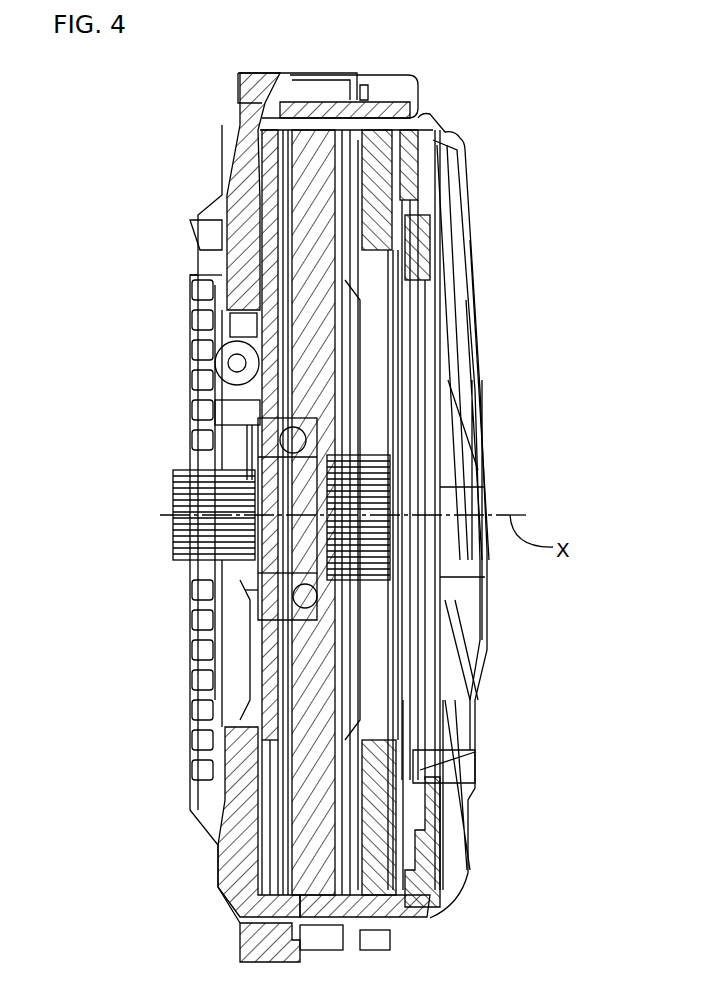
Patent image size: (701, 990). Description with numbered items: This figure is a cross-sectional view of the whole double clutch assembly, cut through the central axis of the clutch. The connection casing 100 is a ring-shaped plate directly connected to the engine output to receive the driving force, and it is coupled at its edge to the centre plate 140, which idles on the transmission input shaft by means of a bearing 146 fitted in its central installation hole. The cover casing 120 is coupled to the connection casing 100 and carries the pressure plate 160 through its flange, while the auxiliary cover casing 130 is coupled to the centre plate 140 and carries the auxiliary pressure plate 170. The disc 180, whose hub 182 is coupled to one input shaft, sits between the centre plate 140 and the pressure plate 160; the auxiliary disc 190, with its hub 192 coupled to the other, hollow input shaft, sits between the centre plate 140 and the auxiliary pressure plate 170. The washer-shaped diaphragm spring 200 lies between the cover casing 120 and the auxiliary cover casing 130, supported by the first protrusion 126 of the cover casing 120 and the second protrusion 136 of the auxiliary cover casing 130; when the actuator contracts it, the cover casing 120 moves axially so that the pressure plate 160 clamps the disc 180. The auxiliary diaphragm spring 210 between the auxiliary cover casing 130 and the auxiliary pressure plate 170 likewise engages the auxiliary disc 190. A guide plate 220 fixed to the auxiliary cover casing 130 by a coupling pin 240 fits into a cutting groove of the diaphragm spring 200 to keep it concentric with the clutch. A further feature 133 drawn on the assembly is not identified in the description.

The connection casing 100 is at (215, 245).
The cover casing 120 is at (422, 112).
The first protrusion 126 is at (465, 185).
The auxiliary cover casing 130 is at (398, 128).
The coupling portion 133 is at (445, 195).
The second protrusion 136 is at (460, 225).
The centre plate 140 is at (313, 130).
The bearing 146 is at (270, 438).
The pressure plate 160 is at (245, 125).
The auxiliary pressure plate 170 is at (462, 255).
The disc 180 is at (270, 160).
The hub 182 is at (183, 472).
The auxiliary disc 190 is at (350, 288).
The hub 192 is at (255, 598).
The diaphragm spring 200 is at (468, 312).
The auxiliary diaphragm spring 210 is at (420, 405).
The guide plate 220 is at (470, 237).
The coupling pin 240 is at (478, 262).